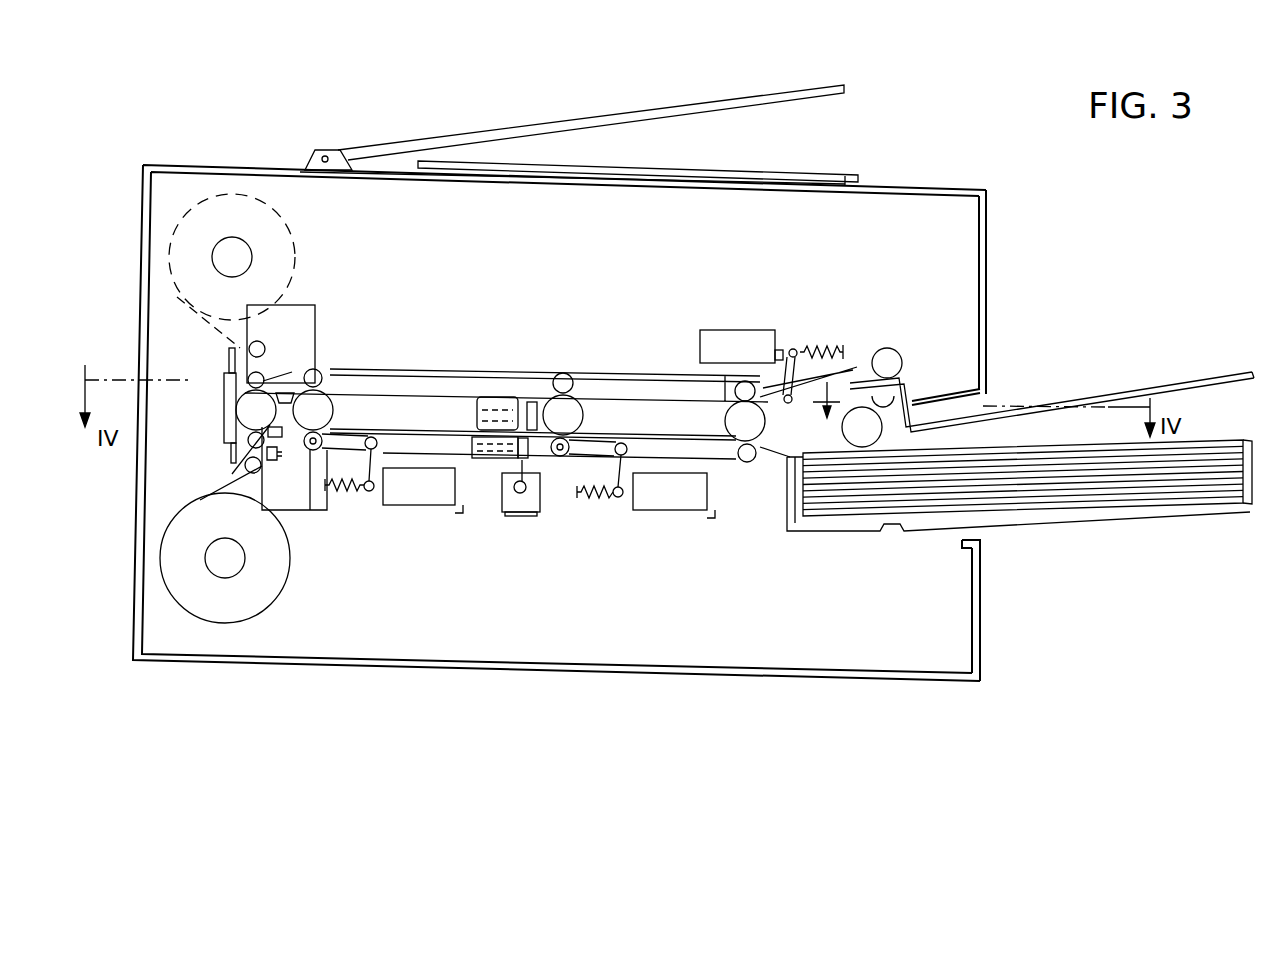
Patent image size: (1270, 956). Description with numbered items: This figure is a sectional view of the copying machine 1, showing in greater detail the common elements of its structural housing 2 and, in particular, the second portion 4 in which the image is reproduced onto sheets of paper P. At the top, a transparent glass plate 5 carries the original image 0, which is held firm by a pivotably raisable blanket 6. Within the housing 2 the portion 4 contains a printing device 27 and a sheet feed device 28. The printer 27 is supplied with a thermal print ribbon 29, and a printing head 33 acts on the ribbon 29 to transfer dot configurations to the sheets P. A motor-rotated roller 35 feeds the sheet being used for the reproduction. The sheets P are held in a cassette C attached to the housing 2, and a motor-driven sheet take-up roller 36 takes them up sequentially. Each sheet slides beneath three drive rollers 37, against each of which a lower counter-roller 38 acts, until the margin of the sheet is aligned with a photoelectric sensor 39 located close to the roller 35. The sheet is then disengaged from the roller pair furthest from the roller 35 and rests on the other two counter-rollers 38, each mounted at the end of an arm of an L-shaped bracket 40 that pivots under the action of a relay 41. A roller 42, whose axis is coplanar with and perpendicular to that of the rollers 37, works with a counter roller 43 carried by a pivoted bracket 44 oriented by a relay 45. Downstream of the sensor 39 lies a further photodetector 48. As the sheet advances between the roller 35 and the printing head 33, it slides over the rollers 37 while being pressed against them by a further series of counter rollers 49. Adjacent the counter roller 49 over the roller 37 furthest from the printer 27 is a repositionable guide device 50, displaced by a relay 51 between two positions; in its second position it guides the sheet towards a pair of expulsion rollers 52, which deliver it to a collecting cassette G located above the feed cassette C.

The original image 0 is at (843, 176).
The copying machine 1 is at (1088, 268).
The structural housing 2 is at (977, 664).
The second portion 4 is at (568, 520).
The transparent glass plate 5 is at (677, 174).
The pivotably raisable blanket 6 is at (697, 103).
The printing device 27 is at (167, 491).
The sheet feed device 28 is at (422, 534).
The thermal print ribbon 29 is at (201, 337).
The printing head 33 is at (228, 415).
The roller 35 is at (256, 405).
The sheet take-up roller 36 is at (860, 427).
The drive rollers 37 is at (318, 394).
The lower counter-rollers 38 is at (316, 452).
The photoelectric sensor 39 is at (302, 512).
The L-shaped bracket 40 is at (370, 491).
The relay 41 is at (415, 490).
The roller 42 is at (497, 413).
The counter roller 43 is at (493, 457).
The pivoted bracket 44 is at (503, 515).
The relay 45 is at (530, 512).
The photodetector 48 is at (258, 457).
The counter rollers 49 is at (317, 368).
The repositionable guide device 50 is at (800, 385).
The relay 51 is at (745, 348).
The expulsion rollers 52 is at (888, 362).
The cassette C is at (1070, 512).
The collecting cassette G is at (1207, 378).
The sheets of paper P is at (1180, 480).